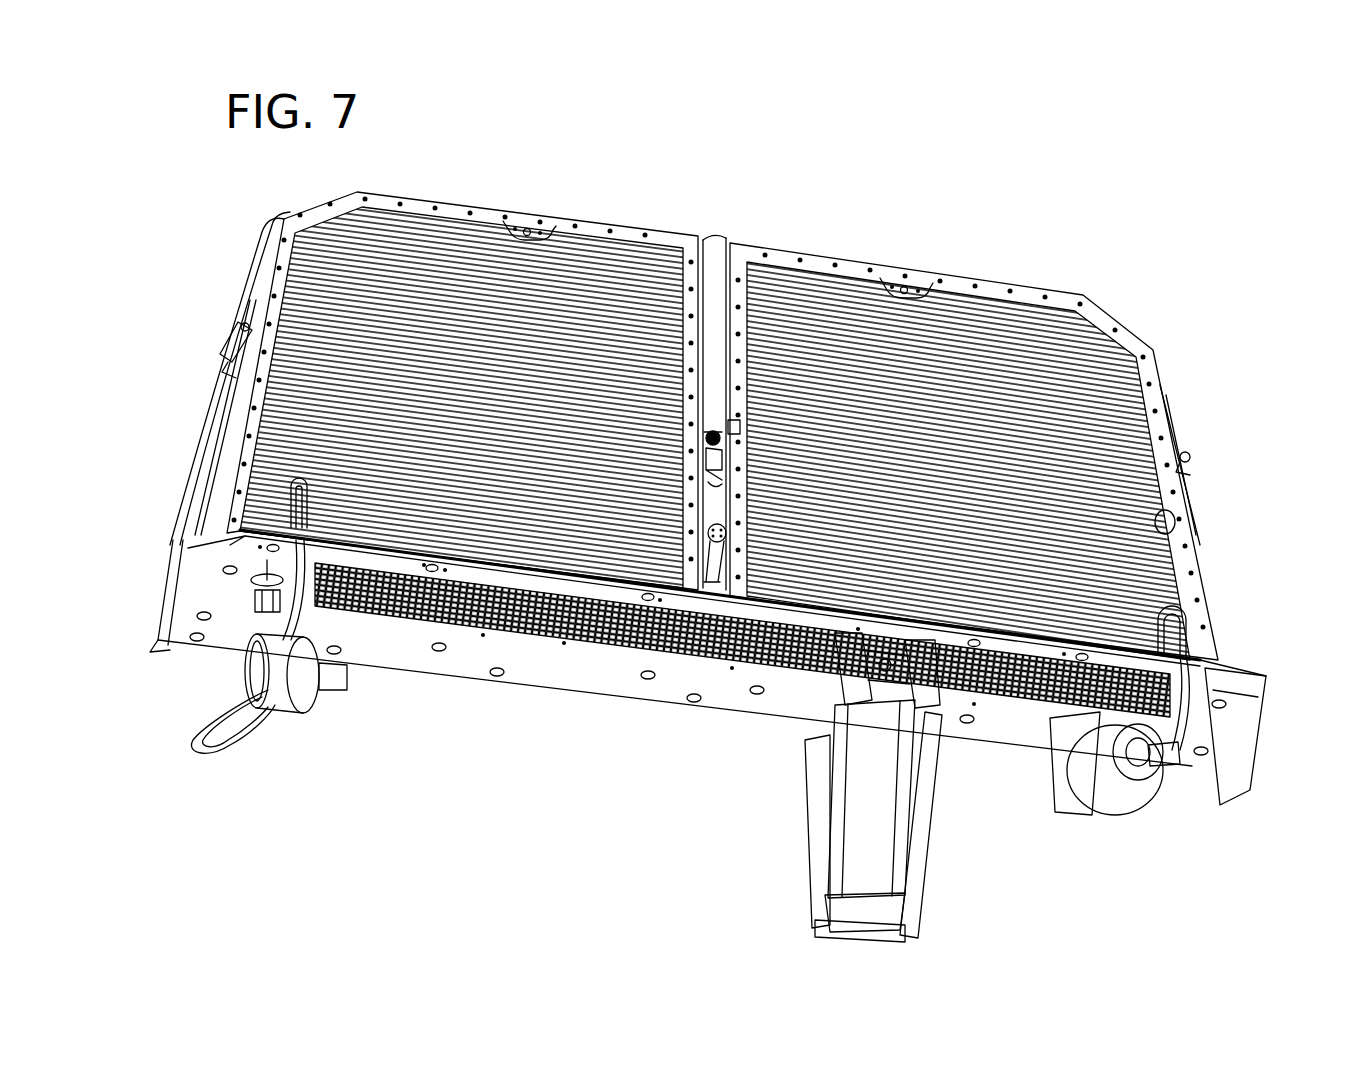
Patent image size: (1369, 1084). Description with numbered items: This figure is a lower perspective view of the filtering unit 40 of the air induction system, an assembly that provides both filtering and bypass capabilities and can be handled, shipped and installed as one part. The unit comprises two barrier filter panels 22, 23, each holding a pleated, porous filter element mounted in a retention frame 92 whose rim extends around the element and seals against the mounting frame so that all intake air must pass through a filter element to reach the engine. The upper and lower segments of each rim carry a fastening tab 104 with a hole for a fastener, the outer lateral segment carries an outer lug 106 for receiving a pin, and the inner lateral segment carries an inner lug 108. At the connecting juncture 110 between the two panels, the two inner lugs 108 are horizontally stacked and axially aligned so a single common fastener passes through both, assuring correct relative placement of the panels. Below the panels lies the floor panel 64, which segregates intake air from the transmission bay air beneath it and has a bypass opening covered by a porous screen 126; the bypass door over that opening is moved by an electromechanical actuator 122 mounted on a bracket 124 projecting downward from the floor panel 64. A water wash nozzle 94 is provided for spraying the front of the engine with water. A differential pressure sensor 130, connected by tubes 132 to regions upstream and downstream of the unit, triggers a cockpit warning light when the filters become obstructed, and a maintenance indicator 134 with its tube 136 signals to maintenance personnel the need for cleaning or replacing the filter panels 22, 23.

The first barrier filter panel 22 is at (293, 214).
The second barrier filter panel 23 is at (1133, 328).
The filtering unit 40 is at (1045, 283).
The floor panel 64 is at (587, 690).
The retention frame 92 is at (1180, 540).
The water wash nozzle 94 is at (707, 533).
The fastening tab 104 is at (510, 243).
The outer lug 106 is at (230, 338).
The inner lug 108 is at (703, 433).
The connecting juncture 110 is at (740, 425).
The electromechanical actuator 122 is at (894, 719).
The bracket 124 is at (934, 833).
The porous screen 126 is at (736, 660).
The differential pressure sensor 130 is at (307, 700).
The tubes 132 is at (290, 491).
The maintenance indicator 134 is at (1125, 813).
The tube 136 is at (1190, 641).